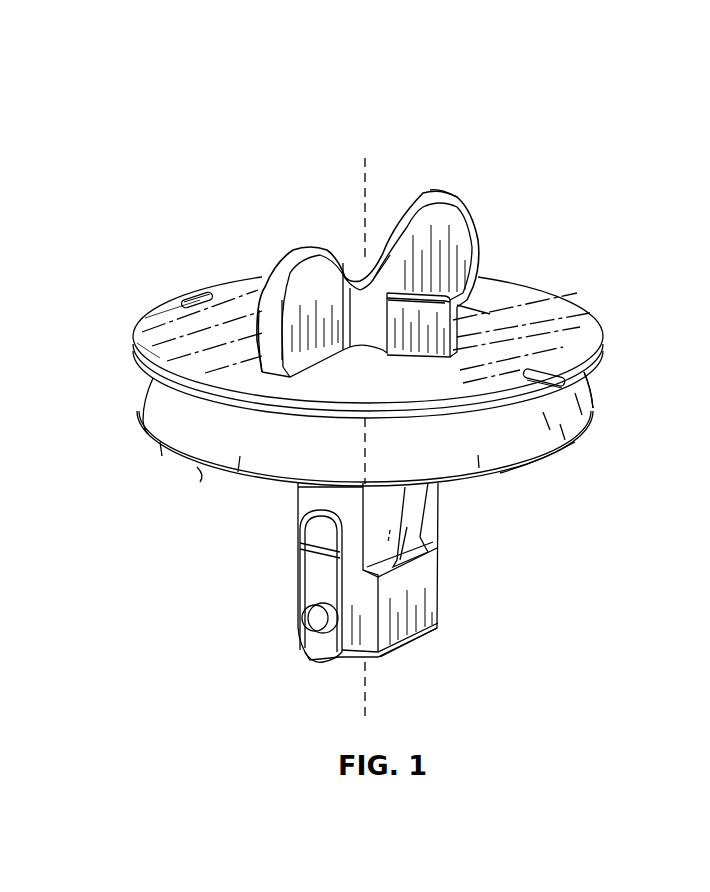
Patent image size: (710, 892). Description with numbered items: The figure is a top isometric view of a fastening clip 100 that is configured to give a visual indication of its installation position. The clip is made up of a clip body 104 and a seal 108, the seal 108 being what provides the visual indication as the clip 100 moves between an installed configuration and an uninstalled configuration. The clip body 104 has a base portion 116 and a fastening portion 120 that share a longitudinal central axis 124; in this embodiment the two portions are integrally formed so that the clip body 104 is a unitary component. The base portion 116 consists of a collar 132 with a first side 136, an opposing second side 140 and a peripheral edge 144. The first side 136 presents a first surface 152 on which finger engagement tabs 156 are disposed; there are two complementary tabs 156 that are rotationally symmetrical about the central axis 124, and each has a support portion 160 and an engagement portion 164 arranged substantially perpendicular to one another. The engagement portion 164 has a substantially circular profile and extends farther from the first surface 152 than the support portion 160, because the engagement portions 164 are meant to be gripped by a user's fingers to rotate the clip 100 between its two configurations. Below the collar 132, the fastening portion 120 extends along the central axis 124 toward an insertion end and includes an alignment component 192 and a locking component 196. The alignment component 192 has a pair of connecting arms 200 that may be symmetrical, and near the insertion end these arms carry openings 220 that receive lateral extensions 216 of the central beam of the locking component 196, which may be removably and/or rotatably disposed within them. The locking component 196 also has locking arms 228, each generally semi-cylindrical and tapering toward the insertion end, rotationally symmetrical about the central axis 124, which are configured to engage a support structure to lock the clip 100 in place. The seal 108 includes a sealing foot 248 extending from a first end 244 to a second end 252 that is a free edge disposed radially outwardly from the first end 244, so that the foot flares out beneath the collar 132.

The fastening clip 100 is at (194, 140).
The clip body 104 is at (560, 326).
The seal 108 is at (487, 460).
The base portion 116 is at (492, 252).
The fastening portion 120 is at (453, 580).
The central axis 124 is at (366, 180).
The collar 132 is at (156, 349).
The first side 136 is at (162, 314).
The second side 140 is at (207, 401).
The peripheral edge 144 is at (603, 344).
The first surface 152 is at (224, 280).
The finger engagement tabs 156 is at (387, 243).
The support portion 160 is at (398, 323).
The engagement portion 164 is at (320, 268).
The alignment component 192 is at (405, 615).
The locking component 196 is at (305, 553).
The connecting arms 200 is at (318, 497).
The lateral extensions 216 is at (320, 616).
The openings 220 is at (312, 639).
The locking arms 228 is at (415, 522).
The first end 244 is at (587, 383).
The sealing foot 248 is at (553, 451).
The second end 252 is at (197, 467).